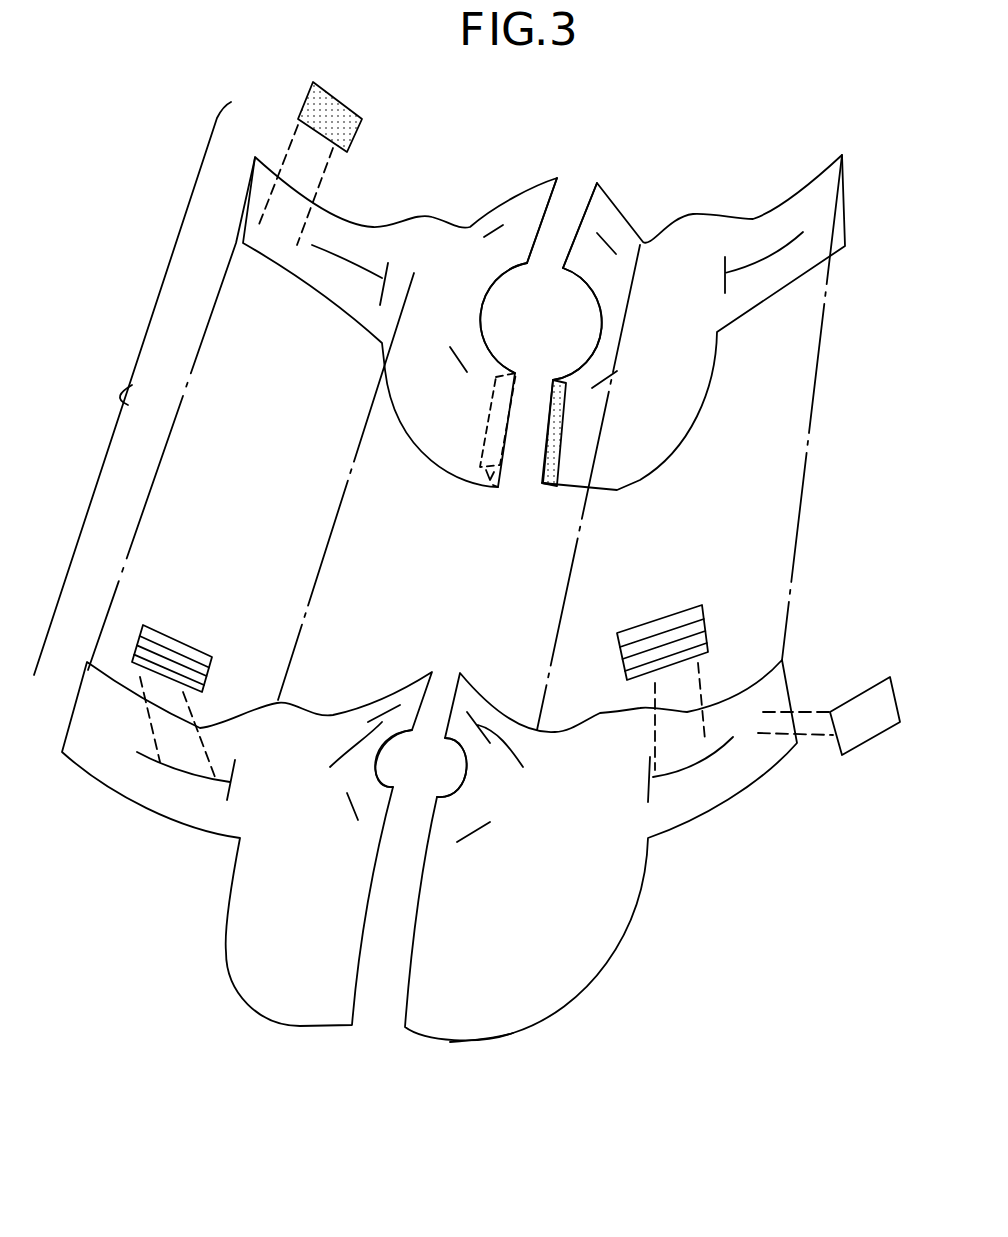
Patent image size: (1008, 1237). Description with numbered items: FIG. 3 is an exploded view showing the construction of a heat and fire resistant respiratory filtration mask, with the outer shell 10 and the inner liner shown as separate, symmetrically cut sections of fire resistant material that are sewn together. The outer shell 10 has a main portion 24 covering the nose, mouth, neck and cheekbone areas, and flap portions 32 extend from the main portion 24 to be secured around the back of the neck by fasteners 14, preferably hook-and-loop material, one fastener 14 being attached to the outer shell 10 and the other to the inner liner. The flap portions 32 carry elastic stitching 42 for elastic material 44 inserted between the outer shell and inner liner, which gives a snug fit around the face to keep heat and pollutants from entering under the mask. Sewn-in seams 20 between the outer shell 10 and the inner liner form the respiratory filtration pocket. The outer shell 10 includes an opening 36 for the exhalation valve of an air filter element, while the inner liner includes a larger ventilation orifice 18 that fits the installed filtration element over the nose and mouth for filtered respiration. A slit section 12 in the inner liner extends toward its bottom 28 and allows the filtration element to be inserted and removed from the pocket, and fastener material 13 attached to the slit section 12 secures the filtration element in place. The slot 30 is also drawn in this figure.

The outer shell 10 is at (250, 963).
The slit section 12 is at (550, 437).
The fastener material 13 is at (537, 488).
The fasteners 14 is at (312, 86).
The ventilation orifice 18 is at (582, 337).
The sewn-in seams 20 is at (495, 227).
The main portion 24 is at (513, 1033).
The bottom 28 is at (420, 463).
The neck slot 30 is at (603, 182).
The flap portions 32 is at (267, 263).
The opening 36 is at (376, 758).
The elastic stitching 42 is at (355, 270).
The elastic material 44 is at (173, 635).